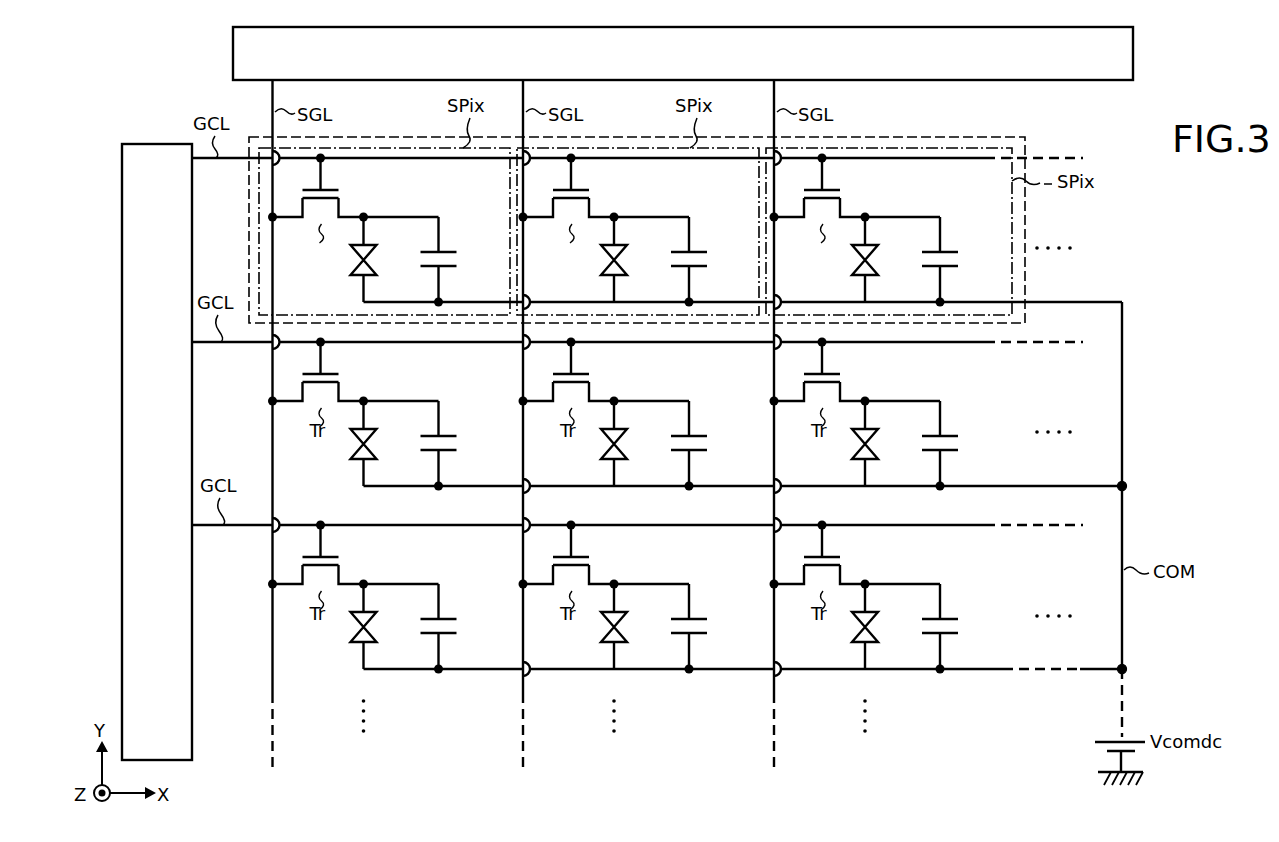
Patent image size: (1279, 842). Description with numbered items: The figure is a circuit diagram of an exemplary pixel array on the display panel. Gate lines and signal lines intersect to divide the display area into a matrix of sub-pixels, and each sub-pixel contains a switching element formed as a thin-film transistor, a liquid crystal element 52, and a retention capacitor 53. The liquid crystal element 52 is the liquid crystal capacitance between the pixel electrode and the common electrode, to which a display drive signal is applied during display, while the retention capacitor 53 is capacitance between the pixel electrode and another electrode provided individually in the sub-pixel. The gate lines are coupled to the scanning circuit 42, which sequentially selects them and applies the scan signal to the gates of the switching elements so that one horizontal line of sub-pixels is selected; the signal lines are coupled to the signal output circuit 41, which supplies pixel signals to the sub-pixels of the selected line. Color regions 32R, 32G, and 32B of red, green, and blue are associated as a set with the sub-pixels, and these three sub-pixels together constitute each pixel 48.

The signal output circuit 41 is at (1133, 56).
The scanning circuit 42 is at (152, 150).
The pixel 48 is at (1025, 143).
The color region 32R is at (379, 195).
The color region 32G is at (619, 195).
The color region 32B is at (975, 232).
The liquid crystal element 52 is at (634, 443).
The retention capacitor 53 is at (711, 445).